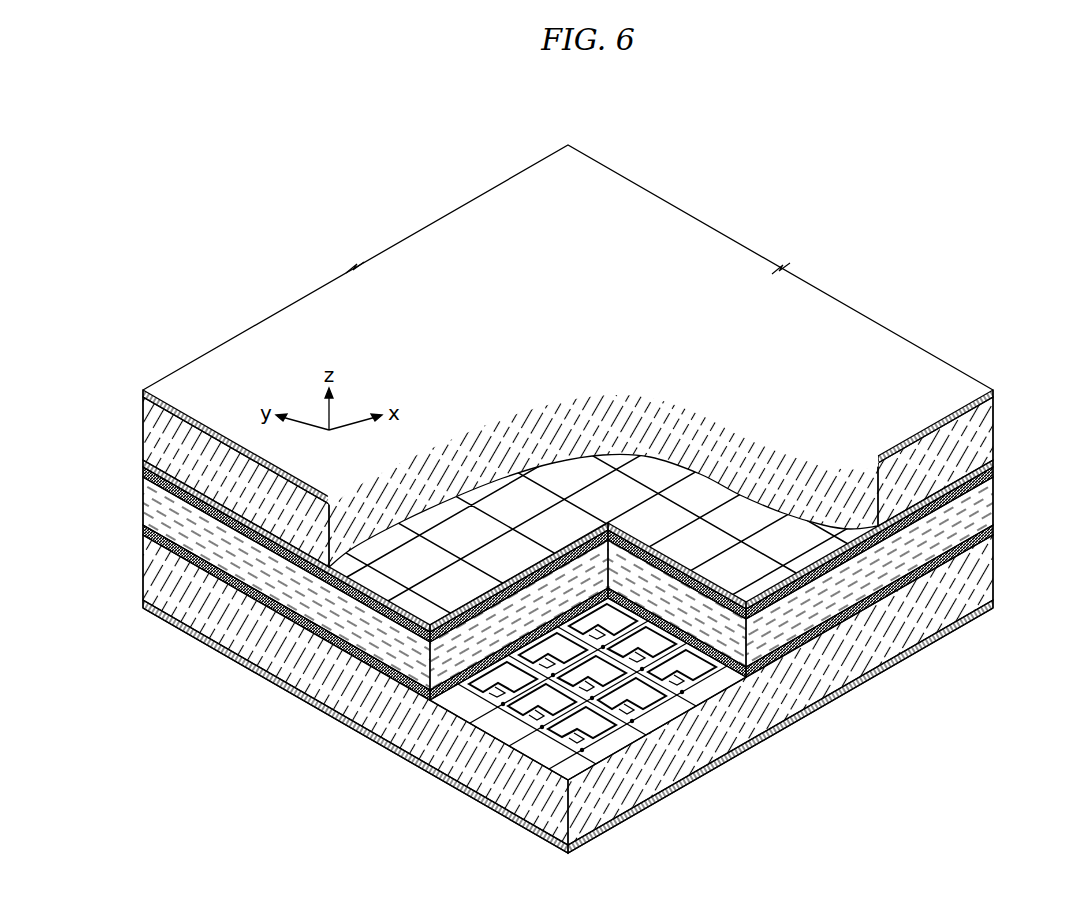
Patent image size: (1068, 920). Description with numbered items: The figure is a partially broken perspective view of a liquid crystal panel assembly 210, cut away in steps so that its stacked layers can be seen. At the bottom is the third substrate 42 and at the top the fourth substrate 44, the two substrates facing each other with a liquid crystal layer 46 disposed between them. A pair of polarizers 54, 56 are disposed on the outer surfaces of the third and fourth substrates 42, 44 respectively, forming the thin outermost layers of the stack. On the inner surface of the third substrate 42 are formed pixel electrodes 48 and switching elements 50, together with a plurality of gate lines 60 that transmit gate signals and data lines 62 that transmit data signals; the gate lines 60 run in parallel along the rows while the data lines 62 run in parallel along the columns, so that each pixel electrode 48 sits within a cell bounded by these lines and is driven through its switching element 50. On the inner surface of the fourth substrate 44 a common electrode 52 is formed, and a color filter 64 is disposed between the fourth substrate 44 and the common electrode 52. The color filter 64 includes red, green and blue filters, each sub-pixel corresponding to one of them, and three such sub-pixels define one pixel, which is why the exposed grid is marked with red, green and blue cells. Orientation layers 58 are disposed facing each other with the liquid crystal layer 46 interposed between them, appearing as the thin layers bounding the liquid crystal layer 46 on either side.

The liquid crystal panel assembly 210 is at (745, 214).
The third substrate 42 is at (158, 568).
The fourth substrate 44 is at (158, 433).
The liquid crystal layer 46 is at (860, 585).
The pixel electrodes 48 is at (598, 732).
The switching elements 50 is at (570, 750).
The common electrode 52 is at (993, 475).
The polarizer 54 is at (332, 706).
The polarizer 56 is at (228, 362).
The orientation layers 58 is at (145, 530).
The gate lines 60 is at (482, 720).
The data lines 62 is at (525, 757).
The color filter 64 is at (793, 600).